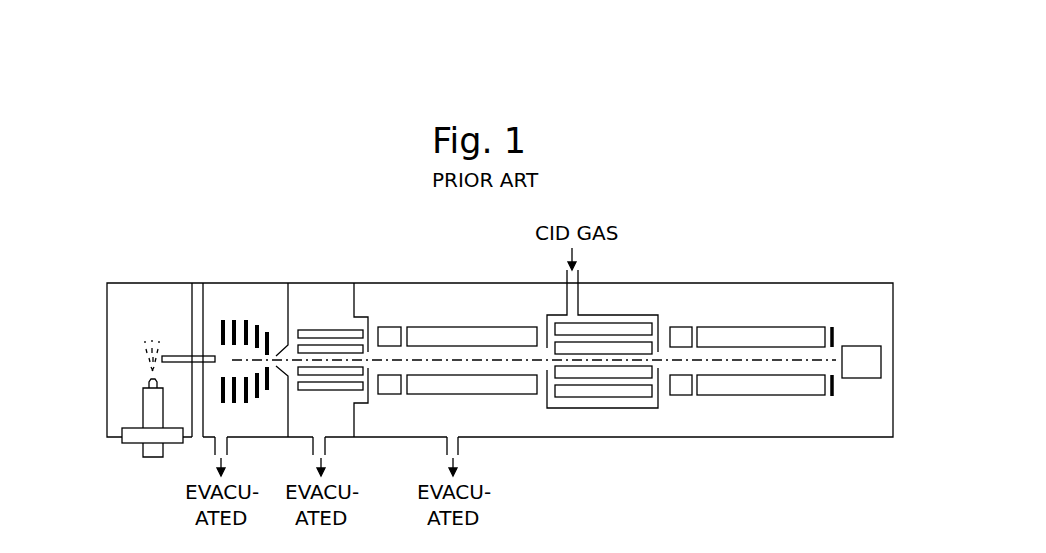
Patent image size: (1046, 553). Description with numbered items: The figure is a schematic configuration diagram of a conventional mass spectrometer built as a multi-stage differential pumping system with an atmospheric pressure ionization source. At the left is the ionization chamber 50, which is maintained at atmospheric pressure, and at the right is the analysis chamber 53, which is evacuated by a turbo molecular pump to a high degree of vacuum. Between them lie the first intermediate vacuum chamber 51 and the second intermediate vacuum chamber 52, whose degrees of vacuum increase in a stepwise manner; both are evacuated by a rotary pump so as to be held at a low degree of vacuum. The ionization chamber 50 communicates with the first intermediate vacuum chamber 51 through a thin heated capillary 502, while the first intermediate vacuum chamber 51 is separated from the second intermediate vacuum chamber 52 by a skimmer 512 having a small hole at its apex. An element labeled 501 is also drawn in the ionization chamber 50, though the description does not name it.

The ionization chamber 50 is at (139, 292).
The first intermediate vacuum chamber 51 is at (217, 293).
The second intermediate vacuum chamber 52 is at (303, 295).
The analysis chamber 53 is at (428, 295).
The laser irradiation unit 501 is at (143, 407).
The heated capillary 502 is at (181, 353).
The skimmer 512 is at (279, 352).